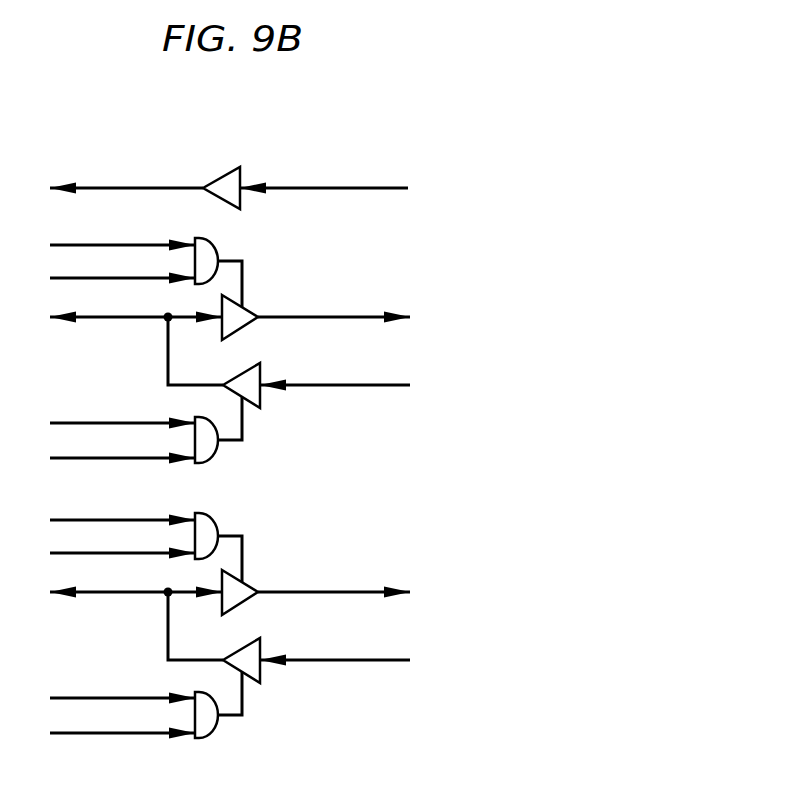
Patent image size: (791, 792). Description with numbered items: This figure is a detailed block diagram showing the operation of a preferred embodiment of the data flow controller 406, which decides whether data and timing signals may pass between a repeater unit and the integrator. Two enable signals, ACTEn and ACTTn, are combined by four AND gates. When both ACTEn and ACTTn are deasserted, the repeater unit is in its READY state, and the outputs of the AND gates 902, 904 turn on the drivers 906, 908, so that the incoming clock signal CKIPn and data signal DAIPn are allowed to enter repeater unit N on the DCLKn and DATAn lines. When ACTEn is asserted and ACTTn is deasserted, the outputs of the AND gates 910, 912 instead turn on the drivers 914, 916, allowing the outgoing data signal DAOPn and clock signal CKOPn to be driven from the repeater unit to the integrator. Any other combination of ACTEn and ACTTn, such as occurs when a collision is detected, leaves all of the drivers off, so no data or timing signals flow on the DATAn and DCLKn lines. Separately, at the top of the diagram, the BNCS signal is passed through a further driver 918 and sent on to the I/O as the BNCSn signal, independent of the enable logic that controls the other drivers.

The data flow controller 406 is at (458, 208).
The driver 918 is at (222, 178).
The AND gate 912 is at (218, 240).
The driver 916 is at (250, 312).
The driver 908 is at (244, 363).
The AND gate 904 is at (218, 447).
The AND gate 910 is at (218, 515).
The driver 914 is at (250, 587).
The driver 906 is at (244, 638).
The AND gate 902 is at (218, 722).